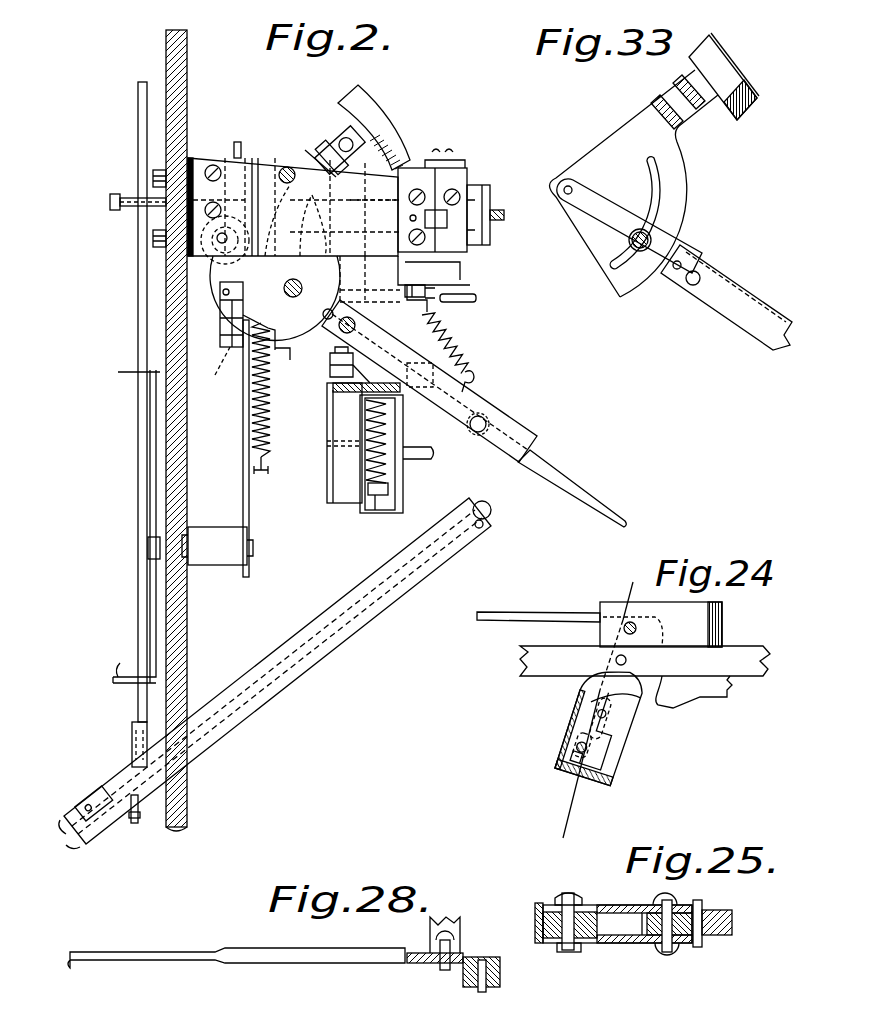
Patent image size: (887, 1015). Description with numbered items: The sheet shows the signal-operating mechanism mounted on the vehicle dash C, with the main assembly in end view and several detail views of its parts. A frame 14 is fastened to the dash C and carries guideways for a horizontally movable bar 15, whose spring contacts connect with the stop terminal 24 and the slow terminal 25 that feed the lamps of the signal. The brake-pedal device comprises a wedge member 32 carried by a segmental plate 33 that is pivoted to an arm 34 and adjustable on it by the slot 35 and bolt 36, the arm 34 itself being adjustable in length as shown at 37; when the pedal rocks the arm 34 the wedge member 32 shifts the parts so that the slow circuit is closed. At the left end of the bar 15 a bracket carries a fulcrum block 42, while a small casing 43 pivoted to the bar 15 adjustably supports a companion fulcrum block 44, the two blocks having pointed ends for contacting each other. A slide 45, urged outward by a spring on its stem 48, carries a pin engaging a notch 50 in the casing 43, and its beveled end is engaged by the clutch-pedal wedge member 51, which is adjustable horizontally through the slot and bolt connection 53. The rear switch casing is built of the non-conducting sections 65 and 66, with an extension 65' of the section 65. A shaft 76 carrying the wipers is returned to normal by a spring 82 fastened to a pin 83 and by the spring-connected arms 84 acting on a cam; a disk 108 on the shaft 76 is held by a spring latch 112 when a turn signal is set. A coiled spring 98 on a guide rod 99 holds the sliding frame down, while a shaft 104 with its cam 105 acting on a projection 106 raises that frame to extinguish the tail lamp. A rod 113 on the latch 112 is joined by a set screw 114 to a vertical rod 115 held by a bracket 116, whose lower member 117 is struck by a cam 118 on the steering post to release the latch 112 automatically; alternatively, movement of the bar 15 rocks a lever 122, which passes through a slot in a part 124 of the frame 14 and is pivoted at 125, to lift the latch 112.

In FIG. 2, the dash C is at (187, 493).
In FIG. 2, the frame 14 is at (294, 249).
In FIG. 2, the bar 15 is at (490, 229).
In FIG. 24, the bar 15 is at (730, 655).
In FIG. 25, the bar 15 is at (675, 945).
In FIG. 2, the stop terminal 24 is at (495, 212).
In FIG. 24, the slow terminal 25 is at (599, 712).
In FIG. 33, the wedge member 32 is at (741, 81).
In FIG. 33, the segmental plate 33 is at (625, 135).
In FIG. 33, the arm 34 is at (668, 272).
In FIG. 33, the slot 35 is at (655, 207).
In FIG. 33, the bolt 36 is at (633, 250).
In FIG. 33, the length adjustment 37 is at (757, 300).
In FIG. 24, the fulcrum block 42 is at (705, 705).
In FIG. 24, the casing 43 is at (566, 750).
In FIG. 25, the casing 43 is at (535, 920).
In FIG. 24, the fulcrum block 44 is at (607, 762).
In FIG. 25, the fulcrum block 44 is at (630, 945).
In FIG. 24, the slide 45 is at (700, 620).
In FIG. 25, the slide 45 is at (732, 922).
In FIG. 2, the stem 48 is at (418, 224).
In FIG. 24, the stem 48 is at (552, 600).
In FIG. 24, the notch 50 is at (636, 624).
In FIG. 25, the notch 50 is at (702, 902).
In FIG. 2, the wedge member 51 is at (386, 125).
In FIG. 2, the slot and bolt connection 53 is at (332, 134).
In FIG. 2, the casing section 65 is at (349, 278).
In FIG. 2, the extension 65' is at (324, 466).
In FIG. 2, the casing section 66 is at (405, 284).
In FIG. 2, the shaft 76 is at (476, 298).
In FIG. 2, the spring 82 is at (265, 450).
In FIG. 2, the pin 83 is at (247, 357).
In FIG. 2, the arms 84 is at (374, 224).
In FIG. 2, the coiled spring 98 is at (383, 466).
In FIG. 2, the guide rod 99 is at (380, 497).
In FIG. 2, the shaft 104 is at (418, 455).
In FIG. 2, the cam 105 is at (398, 432).
In FIG. 2, the projection 106 is at (420, 386).
In FIG. 2, the disk 108 is at (240, 325).
In FIG. 2, the spring latch 112 is at (238, 142).
In FIG. 2, the rod 113 is at (153, 205).
In FIG. 2, the set screw 114 is at (120, 200).
In FIG. 2, the rod 115 is at (138, 611).
In FIG. 2, the bracket 116 is at (122, 526).
In FIG. 2, the member 117 is at (131, 778).
In FIG. 2, the cam 118 is at (137, 826).
In FIG. 28, the lever 122 is at (258, 952).
In FIG. 2, the part of frame 124 is at (250, 496).
In FIG. 28, the pivot 125 is at (440, 968).